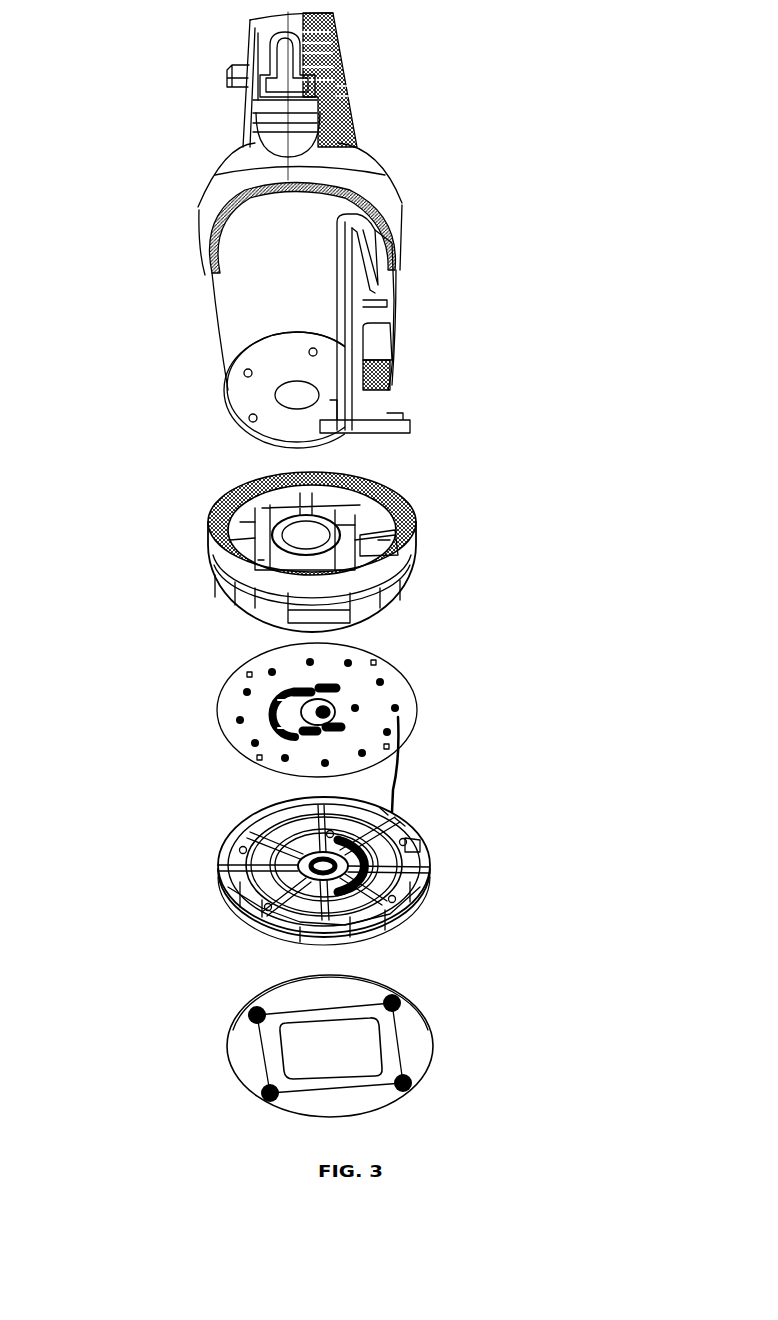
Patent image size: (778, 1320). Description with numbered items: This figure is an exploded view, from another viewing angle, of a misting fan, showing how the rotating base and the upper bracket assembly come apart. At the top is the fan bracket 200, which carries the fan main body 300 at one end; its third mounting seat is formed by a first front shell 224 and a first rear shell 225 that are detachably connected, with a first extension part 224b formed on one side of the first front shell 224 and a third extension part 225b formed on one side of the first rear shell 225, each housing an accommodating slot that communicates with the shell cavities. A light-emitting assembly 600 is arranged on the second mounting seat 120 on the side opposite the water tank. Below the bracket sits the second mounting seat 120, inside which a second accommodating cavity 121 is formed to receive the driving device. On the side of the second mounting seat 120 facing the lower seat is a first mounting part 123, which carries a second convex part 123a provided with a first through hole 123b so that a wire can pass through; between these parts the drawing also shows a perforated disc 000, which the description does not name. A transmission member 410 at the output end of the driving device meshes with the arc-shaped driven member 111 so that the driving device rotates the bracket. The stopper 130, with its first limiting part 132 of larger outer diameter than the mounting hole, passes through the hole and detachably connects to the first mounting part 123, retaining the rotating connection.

The fan main body 300 is at (267, 12).
The first extension part 224b is at (228, 71).
The third extension part 225b is at (352, 92).
The first front shell 224 is at (255, 170).
The first rear shell 225 is at (340, 173).
The fan bracket 200 is at (260, 304).
The light-emitting assembly 600 is at (300, 392).
The second mounting seat 120 is at (253, 493).
The second accommodating cavity 121 is at (370, 540).
The circuit board 000 is at (350, 662).
The first mounting part 123 is at (273, 707).
The second convex part 123a is at (336, 712).
The first through hole 123b is at (273, 716).
The stopper 130 is at (222, 852).
The first limiting part 132 is at (223, 893).
The arc-shaped driven member 111 is at (400, 822).
The transmission member 410 is at (425, 847).